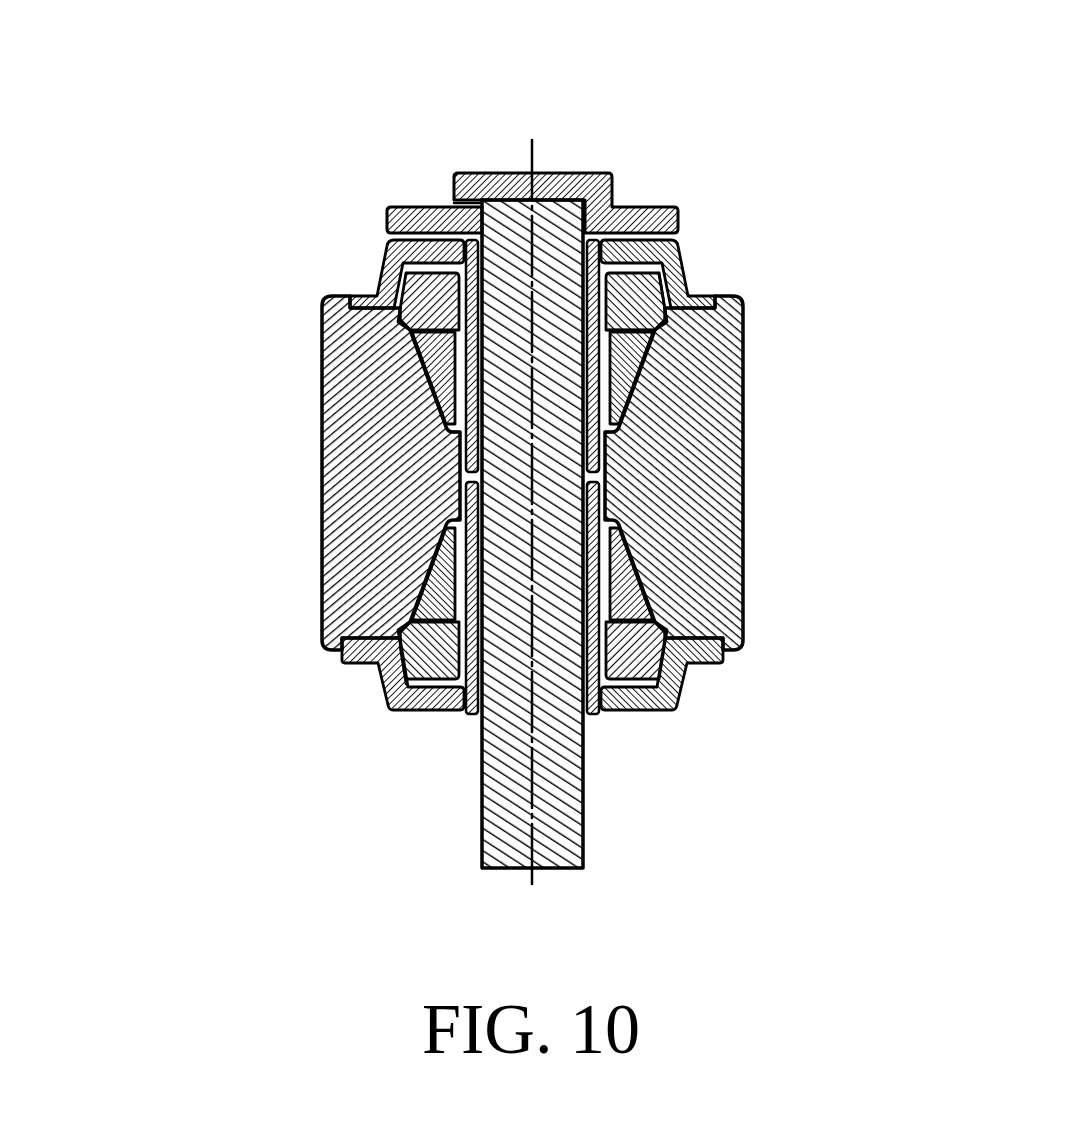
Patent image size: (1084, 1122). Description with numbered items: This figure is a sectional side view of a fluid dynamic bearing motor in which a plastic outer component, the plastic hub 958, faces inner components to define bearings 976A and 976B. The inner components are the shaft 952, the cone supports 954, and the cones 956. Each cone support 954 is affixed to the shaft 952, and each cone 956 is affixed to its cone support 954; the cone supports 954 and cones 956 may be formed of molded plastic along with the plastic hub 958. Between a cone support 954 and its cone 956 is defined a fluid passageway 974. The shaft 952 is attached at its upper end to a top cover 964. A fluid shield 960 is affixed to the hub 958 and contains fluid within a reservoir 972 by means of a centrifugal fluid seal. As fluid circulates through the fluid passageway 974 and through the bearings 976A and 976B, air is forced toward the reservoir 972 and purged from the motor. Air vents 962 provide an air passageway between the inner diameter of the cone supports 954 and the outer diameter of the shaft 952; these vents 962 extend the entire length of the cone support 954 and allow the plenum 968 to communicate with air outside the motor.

The shaft 952 is at (565, 790).
The cone support 954 is at (437, 300).
The cone 956 is at (440, 345).
The plastic hub 958 is at (385, 520).
The fluid shield 960 is at (410, 262).
The air vent 962 is at (556, 197).
The top cover 964 is at (592, 173).
The plenum 968 is at (462, 480).
The reservoir 972 is at (655, 318).
The fluid passageway 974 is at (658, 336).
The bearing 976A is at (645, 408).
The bearing 976B is at (450, 442).